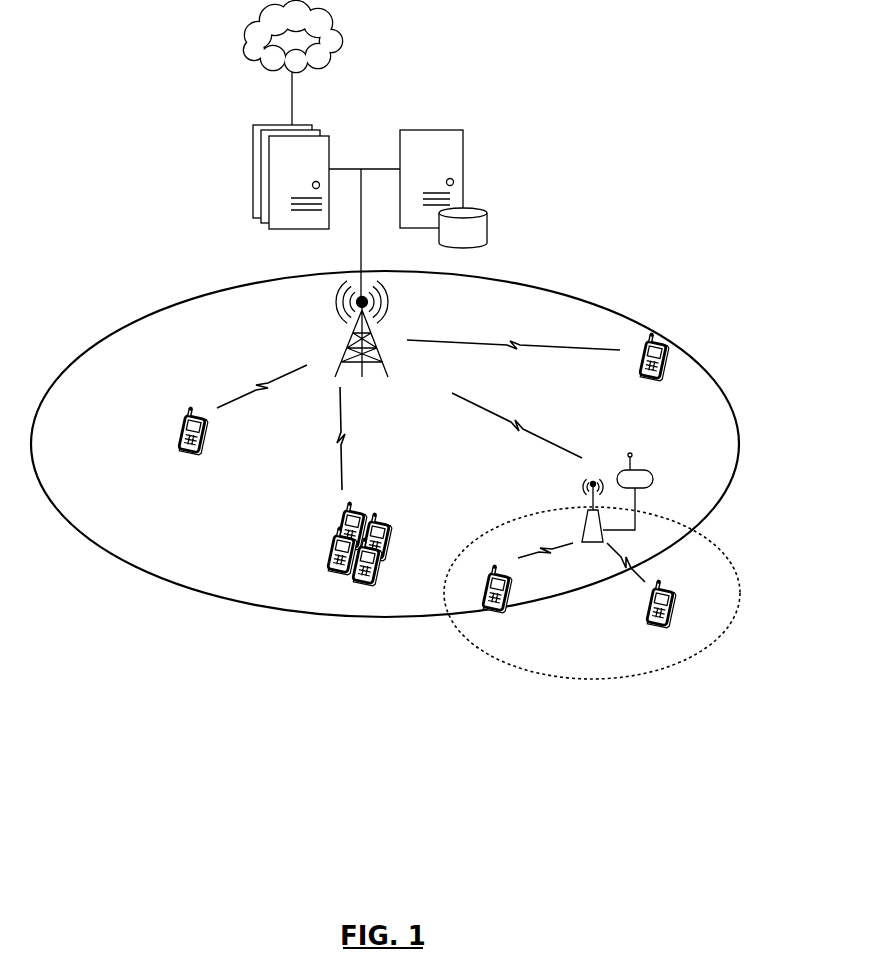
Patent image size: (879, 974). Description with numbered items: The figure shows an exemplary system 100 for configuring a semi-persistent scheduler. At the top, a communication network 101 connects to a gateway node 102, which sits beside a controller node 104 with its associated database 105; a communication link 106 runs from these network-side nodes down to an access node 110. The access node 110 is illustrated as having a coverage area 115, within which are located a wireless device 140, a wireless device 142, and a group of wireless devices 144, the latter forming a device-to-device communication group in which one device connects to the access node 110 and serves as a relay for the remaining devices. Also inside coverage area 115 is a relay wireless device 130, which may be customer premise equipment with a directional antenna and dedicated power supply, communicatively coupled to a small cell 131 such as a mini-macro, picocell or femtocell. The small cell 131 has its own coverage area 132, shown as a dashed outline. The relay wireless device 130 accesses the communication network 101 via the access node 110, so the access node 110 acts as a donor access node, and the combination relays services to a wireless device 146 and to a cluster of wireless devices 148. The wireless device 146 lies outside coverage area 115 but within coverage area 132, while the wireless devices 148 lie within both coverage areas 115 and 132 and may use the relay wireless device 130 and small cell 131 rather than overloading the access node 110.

The system 100 is at (392, 71).
The communication network 101 is at (274, 51).
The gateway node 102 is at (252, 138).
The controller node 104 is at (463, 150).
The database 105 is at (488, 212).
The communication link 106 is at (361, 246).
The access node 110 is at (360, 377).
The coverage area 115 is at (690, 360).
The relay wireless device 130 is at (642, 468).
The small cell 131 is at (587, 503).
The coverage area 132 is at (733, 617).
The wireless device 140 is at (638, 363).
The wireless device 142 is at (178, 438).
The wireless devices 144 is at (330, 553).
The wireless device 146 is at (653, 623).
The wireless devices 148 is at (510, 605).